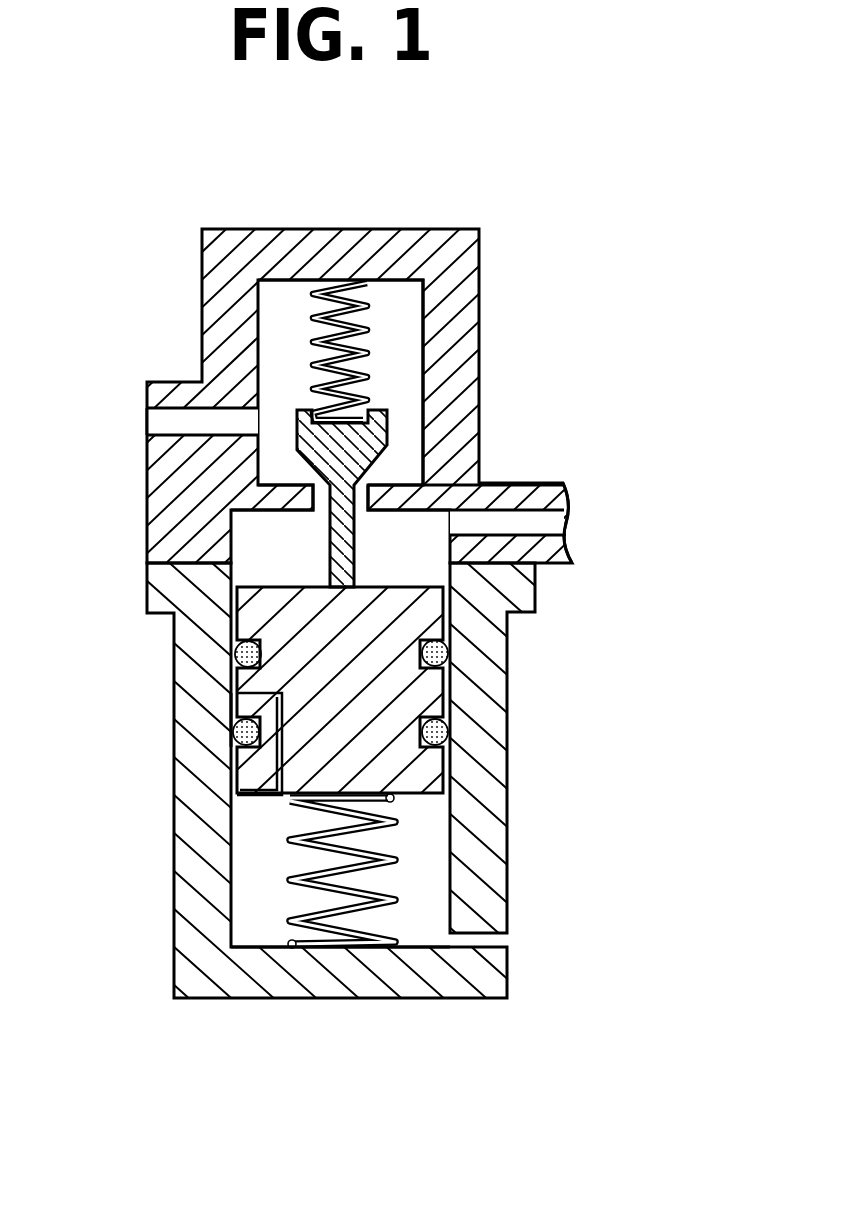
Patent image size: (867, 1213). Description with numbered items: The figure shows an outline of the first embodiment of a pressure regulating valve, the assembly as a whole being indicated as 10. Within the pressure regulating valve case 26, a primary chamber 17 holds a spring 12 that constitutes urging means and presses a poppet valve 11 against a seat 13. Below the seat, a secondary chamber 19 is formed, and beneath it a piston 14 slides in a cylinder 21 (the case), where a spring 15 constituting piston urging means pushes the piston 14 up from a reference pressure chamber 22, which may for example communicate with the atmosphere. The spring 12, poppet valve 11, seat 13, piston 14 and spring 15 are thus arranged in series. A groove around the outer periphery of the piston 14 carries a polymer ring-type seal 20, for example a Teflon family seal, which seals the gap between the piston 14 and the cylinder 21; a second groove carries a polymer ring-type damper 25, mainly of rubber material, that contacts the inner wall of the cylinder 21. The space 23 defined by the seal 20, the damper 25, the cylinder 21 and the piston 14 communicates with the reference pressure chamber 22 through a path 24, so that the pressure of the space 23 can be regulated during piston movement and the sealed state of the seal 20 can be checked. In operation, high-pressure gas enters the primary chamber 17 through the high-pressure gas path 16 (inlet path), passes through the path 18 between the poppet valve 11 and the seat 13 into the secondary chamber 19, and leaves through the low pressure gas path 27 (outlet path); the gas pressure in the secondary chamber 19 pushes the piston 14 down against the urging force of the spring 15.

The pressure regulating valve 10 is at (362, 1089).
The poppet valve 11 is at (375, 437).
The spring 12 is at (372, 337).
The seat 13 is at (388, 484).
The piston 14 is at (432, 612).
The spring 15 is at (400, 848).
The high-pressure gas path 16 is at (178, 413).
The primary chamber 17 is at (284, 310).
The path 18 is at (318, 494).
The secondary chamber 19 is at (287, 551).
The ring-type seal 20 is at (230, 652).
The cylinder 21 is at (185, 865).
The reference pressure chamber 22 is at (247, 897).
The space 23 is at (230, 710).
The path 24 is at (280, 768).
The damper 25 is at (232, 736).
The pressure regulating valve case 26 is at (458, 293).
The low pressure gas path 27 is at (553, 523).